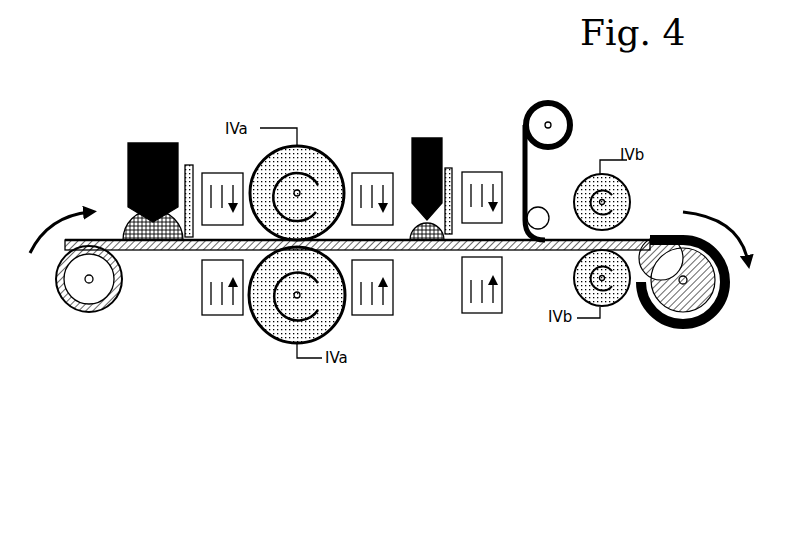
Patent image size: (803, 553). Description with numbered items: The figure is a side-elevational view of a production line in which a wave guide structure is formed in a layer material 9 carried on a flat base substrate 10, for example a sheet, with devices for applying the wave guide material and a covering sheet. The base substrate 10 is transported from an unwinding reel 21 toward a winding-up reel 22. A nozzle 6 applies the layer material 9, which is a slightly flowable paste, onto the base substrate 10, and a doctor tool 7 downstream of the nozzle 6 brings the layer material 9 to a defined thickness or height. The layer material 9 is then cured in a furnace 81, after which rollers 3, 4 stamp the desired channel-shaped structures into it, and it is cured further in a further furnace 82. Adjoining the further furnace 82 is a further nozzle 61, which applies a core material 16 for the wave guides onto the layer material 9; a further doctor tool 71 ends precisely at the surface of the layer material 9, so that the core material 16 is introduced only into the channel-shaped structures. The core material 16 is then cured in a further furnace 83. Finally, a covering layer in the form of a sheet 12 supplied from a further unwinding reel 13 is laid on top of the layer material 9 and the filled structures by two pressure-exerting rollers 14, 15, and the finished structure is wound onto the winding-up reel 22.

The roller 3 is at (330, 163).
The roller 4 is at (278, 338).
The nozzle 6 is at (126, 154).
The doctor tool 7 is at (192, 175).
The layer material 9 is at (126, 226).
The base substrate 10 is at (178, 253).
The sheet 12 is at (530, 178).
The further unwinding reel 13 is at (555, 125).
The pressure-exerting roller 14 is at (633, 190).
The pressure-exerting roller 15 is at (622, 295).
The core material 16 is at (413, 232).
The unwinding reel 21 is at (95, 296).
The winding-up reel 22 is at (705, 313).
The further nozzle 61 is at (443, 147).
The further doctor tool 71 is at (450, 170).
The furnace 81 is at (215, 315).
The further furnace 82 is at (375, 315).
The further furnace 83 is at (482, 313).